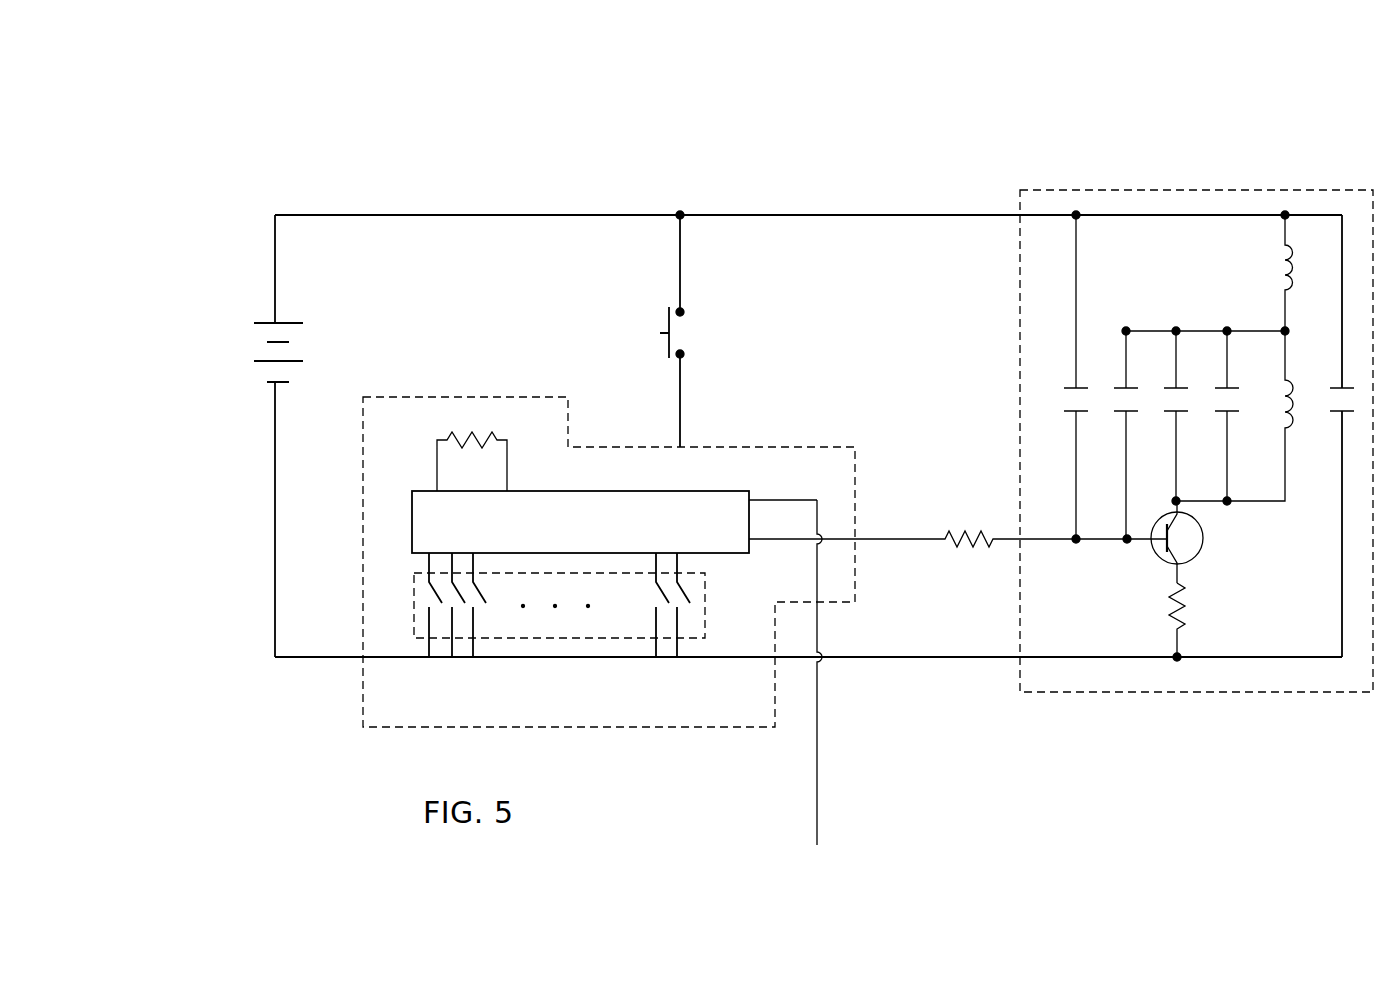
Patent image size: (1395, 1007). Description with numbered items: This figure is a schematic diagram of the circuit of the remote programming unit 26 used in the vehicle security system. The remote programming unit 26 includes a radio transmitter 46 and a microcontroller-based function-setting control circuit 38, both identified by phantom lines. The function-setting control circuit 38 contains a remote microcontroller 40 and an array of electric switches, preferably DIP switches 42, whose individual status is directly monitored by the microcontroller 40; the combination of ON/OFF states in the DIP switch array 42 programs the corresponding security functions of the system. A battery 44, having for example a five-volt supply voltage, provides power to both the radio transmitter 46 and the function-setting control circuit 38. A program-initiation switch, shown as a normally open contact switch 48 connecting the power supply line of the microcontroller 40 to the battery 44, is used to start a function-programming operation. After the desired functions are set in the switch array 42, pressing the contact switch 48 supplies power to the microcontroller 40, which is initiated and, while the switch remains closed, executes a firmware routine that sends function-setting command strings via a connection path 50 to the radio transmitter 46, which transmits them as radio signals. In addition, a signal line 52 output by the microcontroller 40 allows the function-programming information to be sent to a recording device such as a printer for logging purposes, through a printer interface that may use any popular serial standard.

The remote programming unit 26 is at (978, 120).
The microcontroller-based function-setting control circuit 38 is at (437, 388).
The microcontroller 40 is at (733, 489).
The DIP switches 42 is at (406, 605).
The battery 44 is at (257, 322).
The radio transmitter 46 is at (1172, 182).
The contact switch 48 is at (658, 315).
The connection path 50 is at (878, 550).
The signal line 52 is at (830, 792).